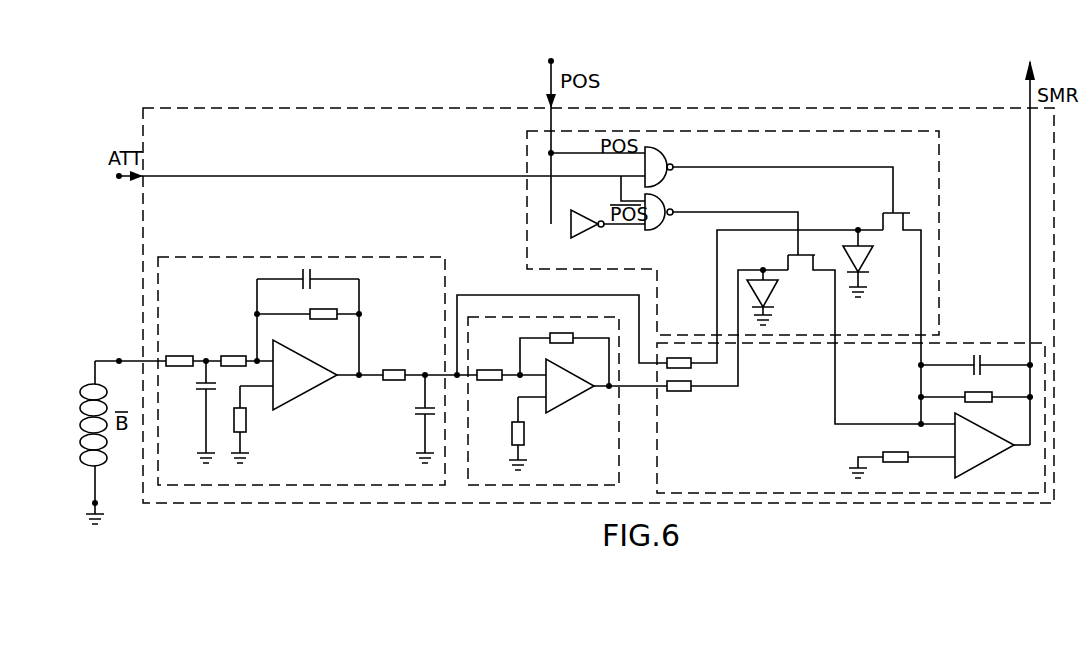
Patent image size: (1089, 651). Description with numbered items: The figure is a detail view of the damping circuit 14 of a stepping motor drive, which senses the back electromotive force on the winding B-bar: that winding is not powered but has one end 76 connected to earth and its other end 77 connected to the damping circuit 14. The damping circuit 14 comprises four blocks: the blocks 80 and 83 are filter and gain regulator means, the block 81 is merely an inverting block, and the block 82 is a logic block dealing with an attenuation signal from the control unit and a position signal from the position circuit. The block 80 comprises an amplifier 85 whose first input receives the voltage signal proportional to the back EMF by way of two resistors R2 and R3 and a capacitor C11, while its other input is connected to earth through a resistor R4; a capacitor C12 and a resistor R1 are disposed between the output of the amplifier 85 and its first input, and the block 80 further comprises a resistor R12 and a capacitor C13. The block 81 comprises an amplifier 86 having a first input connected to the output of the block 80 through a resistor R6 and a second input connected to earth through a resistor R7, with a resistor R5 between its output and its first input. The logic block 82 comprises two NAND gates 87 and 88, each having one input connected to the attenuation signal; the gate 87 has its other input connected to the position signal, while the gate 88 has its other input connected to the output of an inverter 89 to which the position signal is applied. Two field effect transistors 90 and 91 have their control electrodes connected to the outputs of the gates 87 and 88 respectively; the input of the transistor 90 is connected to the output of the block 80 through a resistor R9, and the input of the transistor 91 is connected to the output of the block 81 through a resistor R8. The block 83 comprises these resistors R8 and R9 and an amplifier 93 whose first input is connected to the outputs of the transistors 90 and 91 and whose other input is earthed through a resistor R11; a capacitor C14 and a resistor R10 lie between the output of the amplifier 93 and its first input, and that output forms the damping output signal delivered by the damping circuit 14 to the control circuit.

The damping circuit 14 is at (1045, 199).
The end of winding B-bar 76 is at (98, 504).
The end of winding B-bar 77 is at (119, 358).
The block 80 is at (418, 272).
The block 81 is at (487, 328).
The logic block 82 is at (536, 210).
The block 83 is at (958, 356).
The amplifier 85 is at (299, 385).
The amplifier 86 is at (563, 393).
The NAND gate 87 is at (669, 155).
The NAND gate 88 is at (669, 203).
The inverter 89 is at (582, 229).
The field effect transistor 90 is at (884, 212).
The field effect transistor 91 is at (784, 253).
The amplifier 93 is at (973, 455).
The resistor R1 is at (324, 322).
The resistor R2 is at (232, 355).
The resistor R3 is at (180, 355).
The resistor R4 is at (248, 422).
The resistor R5 is at (566, 343).
The resistor R6 is at (490, 382).
The resistor R7 is at (525, 432).
The resistor R8 is at (673, 392).
The resistor R9 is at (684, 369).
The resistor R10 is at (978, 402).
The resistor R11 is at (890, 452).
The resistor R12 is at (395, 370).
The capacitor C11 is at (204, 390).
The capacitor C12 is at (313, 278).
The capacitor C13 is at (423, 415).
The capacitor C14 is at (975, 360).